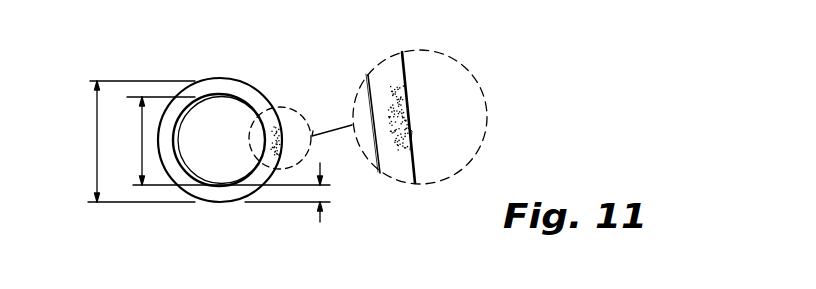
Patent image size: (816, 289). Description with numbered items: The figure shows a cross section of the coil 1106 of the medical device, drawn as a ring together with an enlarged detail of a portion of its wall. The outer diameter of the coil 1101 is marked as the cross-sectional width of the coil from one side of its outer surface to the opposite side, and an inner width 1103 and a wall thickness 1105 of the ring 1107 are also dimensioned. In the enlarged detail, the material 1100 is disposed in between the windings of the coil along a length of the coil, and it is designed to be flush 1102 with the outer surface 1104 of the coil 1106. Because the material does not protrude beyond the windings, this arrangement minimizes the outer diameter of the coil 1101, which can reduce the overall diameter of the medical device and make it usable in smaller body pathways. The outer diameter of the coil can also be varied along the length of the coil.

The material 1100 is at (408, 128).
The outer diameter of the coil 1101 is at (95, 147).
The flush 1102 is at (410, 110).
The inner diameter 1103 is at (142, 145).
The outer surface of the coil 1104 is at (404, 72).
The wall thickness 1105 is at (333, 187).
The coil 1106 is at (404, 167).
The tube wall 1107 is at (242, 97).